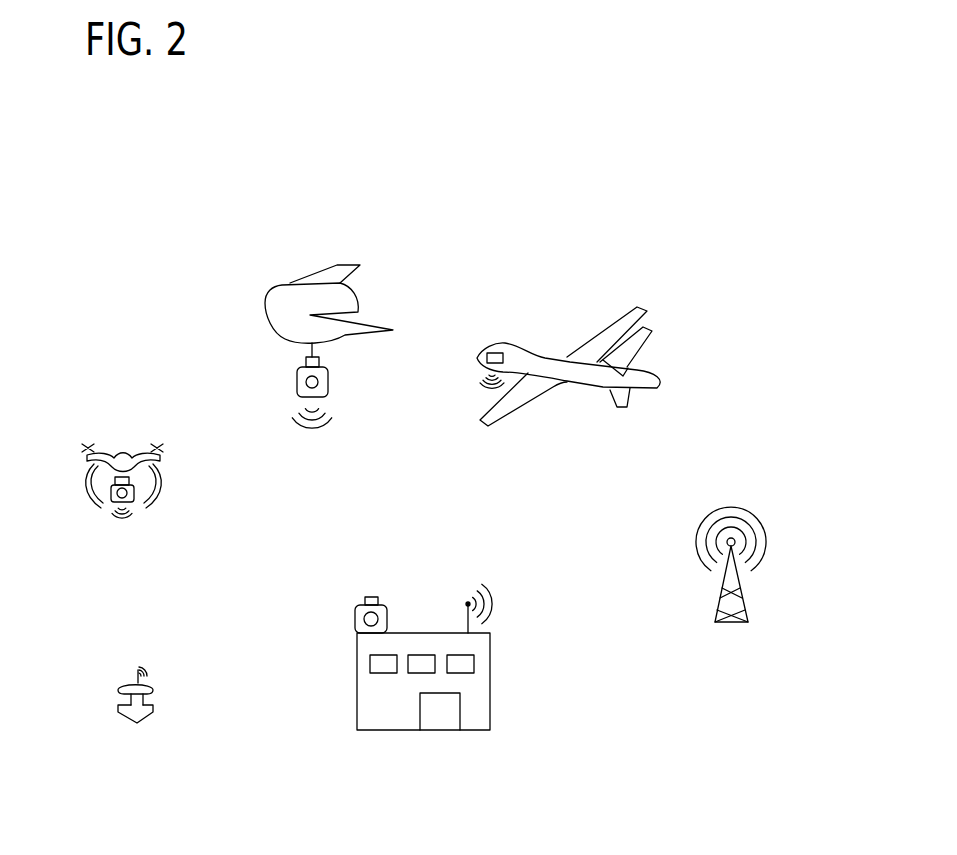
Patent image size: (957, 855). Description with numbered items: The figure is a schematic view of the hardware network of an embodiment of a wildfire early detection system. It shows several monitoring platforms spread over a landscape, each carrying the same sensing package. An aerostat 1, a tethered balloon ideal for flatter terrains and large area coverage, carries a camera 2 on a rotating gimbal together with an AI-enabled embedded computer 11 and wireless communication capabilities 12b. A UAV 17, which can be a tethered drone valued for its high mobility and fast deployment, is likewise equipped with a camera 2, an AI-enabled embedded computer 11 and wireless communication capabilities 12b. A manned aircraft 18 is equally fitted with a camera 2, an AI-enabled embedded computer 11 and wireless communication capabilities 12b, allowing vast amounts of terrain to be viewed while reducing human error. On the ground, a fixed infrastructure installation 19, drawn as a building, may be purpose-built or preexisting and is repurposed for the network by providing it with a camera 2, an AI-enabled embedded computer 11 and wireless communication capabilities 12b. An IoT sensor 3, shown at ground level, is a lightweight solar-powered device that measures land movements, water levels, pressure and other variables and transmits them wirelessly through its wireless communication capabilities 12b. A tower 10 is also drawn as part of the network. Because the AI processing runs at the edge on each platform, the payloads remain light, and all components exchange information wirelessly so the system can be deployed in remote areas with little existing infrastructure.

The Aerostat 1 is at (276, 298).
The Camera 2 is at (487, 366).
The IoT Sensor 3 is at (118, 695).
The base station / radio tower 10 is at (750, 508).
The AI-Enabled-Embedded-Computer 11 is at (306, 360).
The Wireless-Communication-Capabilities 12b is at (487, 396).
The UAV 17 is at (90, 452).
The Manned Aircraft 18 is at (553, 356).
The Fixed-Infrastructure-Installation 19 is at (432, 737).